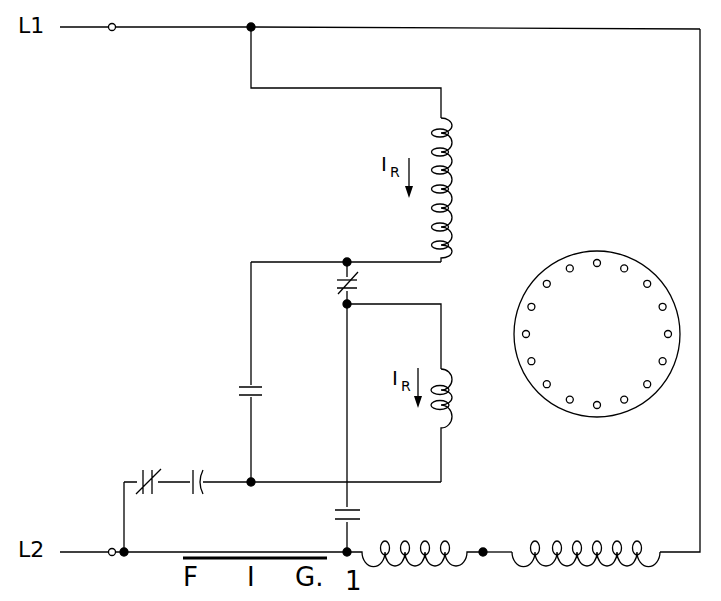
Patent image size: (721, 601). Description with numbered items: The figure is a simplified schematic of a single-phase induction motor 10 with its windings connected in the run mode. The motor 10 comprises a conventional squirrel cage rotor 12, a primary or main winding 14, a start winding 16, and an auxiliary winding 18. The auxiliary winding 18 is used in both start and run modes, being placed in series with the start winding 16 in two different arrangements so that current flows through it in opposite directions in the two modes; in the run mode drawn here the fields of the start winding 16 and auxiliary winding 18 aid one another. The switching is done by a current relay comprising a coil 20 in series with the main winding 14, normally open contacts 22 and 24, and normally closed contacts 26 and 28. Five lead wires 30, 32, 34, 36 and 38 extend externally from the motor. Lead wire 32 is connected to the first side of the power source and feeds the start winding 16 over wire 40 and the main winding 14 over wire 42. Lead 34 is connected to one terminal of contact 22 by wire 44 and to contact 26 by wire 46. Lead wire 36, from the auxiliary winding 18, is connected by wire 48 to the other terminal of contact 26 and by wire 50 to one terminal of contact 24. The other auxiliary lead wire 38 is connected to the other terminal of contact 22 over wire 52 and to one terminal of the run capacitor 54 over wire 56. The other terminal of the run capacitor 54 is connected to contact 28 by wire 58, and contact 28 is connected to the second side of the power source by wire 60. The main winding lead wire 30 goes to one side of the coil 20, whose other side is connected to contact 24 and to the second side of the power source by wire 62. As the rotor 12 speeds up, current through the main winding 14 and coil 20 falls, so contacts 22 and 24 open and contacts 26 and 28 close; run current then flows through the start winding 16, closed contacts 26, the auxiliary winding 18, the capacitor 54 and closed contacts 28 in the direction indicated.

The motor 10 is at (467, 24).
The squirrel cage rotor 12 is at (590, 251).
The main winding 14 is at (585, 568).
The start winding 16 is at (455, 178).
The auxiliary winding 18 is at (455, 397).
The coil 20 is at (413, 565).
The normally open relay contacts 22 is at (238, 392).
The normally open relay contacts 24 is at (362, 513).
The normally closed relay contacts 26 is at (348, 295).
The normally closed relay contacts 28 is at (147, 468).
The main winding lead wire 30 is at (497, 552).
The lead wire 32 is at (158, 27).
The lead wire 34 is at (406, 262).
The lead wire 36 is at (375, 305).
The lead wire 38 is at (370, 482).
The wire 40 is at (318, 88).
The wire 42 is at (549, 29).
The wire 44 is at (250, 300).
The wire 46 is at (351, 268).
The wire 48 is at (342, 300).
The wire 50 is at (347, 362).
The wire 52 is at (253, 432).
The run capacitor 54 is at (200, 496).
The wire 56 is at (227, 481).
The wire 58 is at (172, 481).
The wire 60 is at (126, 516).
The wire 62 is at (247, 552).